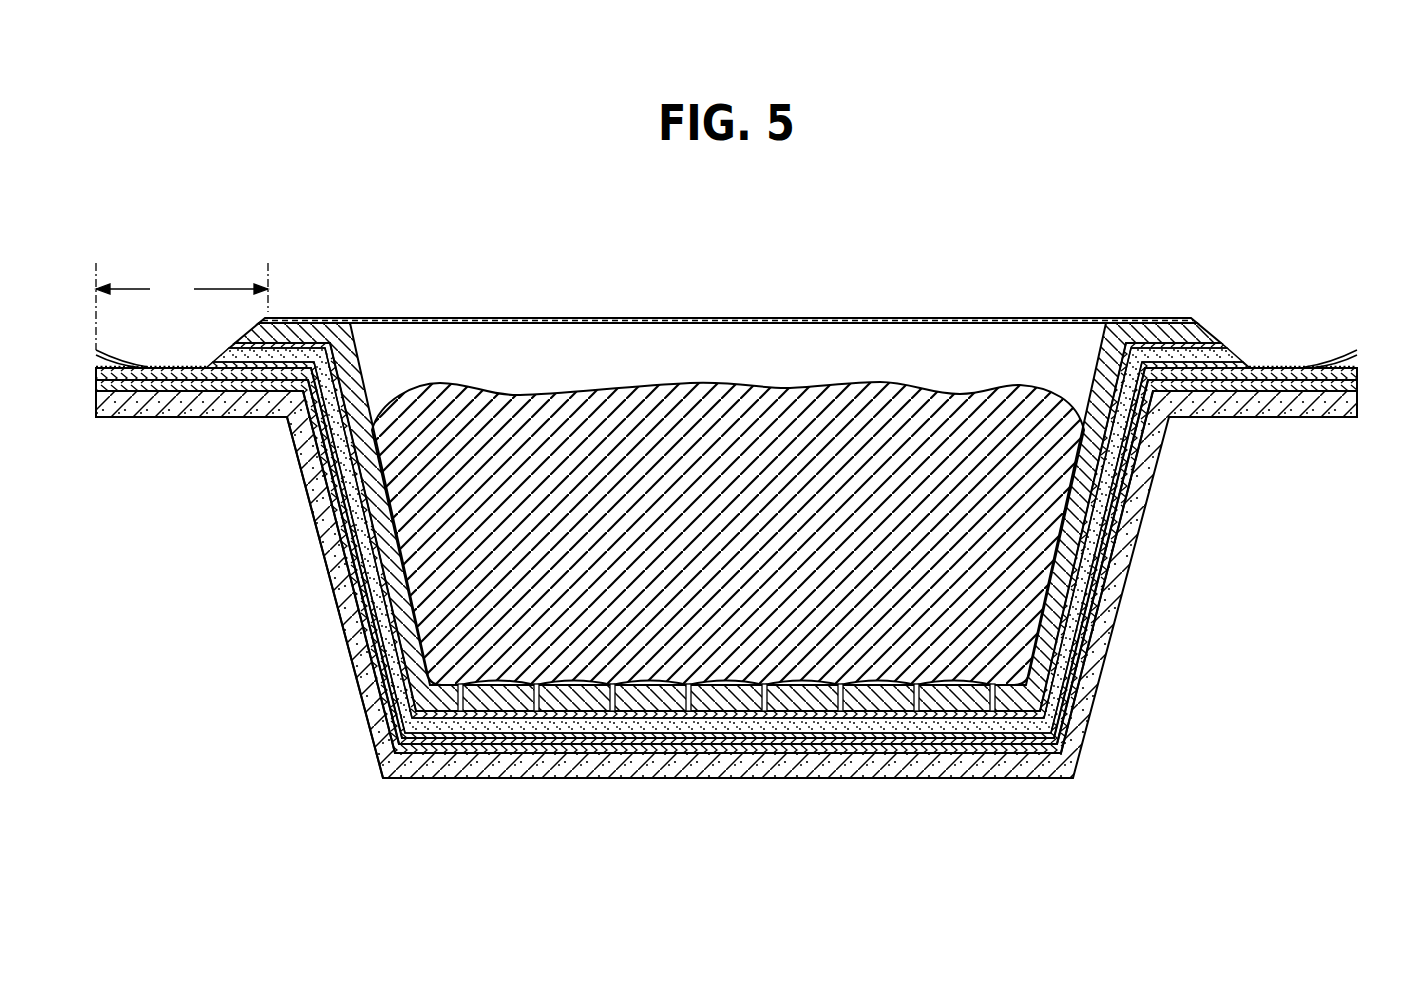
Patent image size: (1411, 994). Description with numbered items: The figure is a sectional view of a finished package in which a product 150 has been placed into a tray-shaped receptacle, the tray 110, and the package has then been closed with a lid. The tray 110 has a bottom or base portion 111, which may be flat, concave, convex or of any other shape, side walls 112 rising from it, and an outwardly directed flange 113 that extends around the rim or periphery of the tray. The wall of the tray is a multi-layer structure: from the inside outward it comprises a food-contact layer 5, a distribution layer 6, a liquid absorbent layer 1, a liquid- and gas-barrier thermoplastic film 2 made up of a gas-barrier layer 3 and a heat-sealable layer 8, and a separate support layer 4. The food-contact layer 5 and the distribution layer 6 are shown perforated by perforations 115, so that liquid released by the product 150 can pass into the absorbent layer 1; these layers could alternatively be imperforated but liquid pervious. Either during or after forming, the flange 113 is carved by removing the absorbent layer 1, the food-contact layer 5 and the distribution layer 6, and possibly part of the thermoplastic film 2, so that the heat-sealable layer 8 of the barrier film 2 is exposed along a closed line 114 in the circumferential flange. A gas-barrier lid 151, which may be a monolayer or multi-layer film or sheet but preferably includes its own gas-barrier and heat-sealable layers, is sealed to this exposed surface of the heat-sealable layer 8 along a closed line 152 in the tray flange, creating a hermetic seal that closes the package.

The liquid absorbent layer 1 is at (1225, 357).
The liquid- and gas-barrier thermoplastic film 2 is at (1362, 368).
The gas-barrier layer 3 is at (1335, 420).
The support layer 4 is at (1290, 410).
The food-contact layer 5 is at (1155, 328).
The distribution layer 6 is at (1203, 348).
The heat-sealable layer 8 is at (1318, 364).
The tray 110 is at (717, 520).
The bottom or base portion 111 is at (725, 692).
The side walls 112 is at (307, 477).
The outwardly directed flange 113 is at (96, 383).
The closed line 114 is at (182, 306).
The perforations 115 is at (461, 684).
The product 150 is at (887, 430).
The gas-barrier lid 151 is at (757, 318).
The closed line 152 is at (1288, 366).